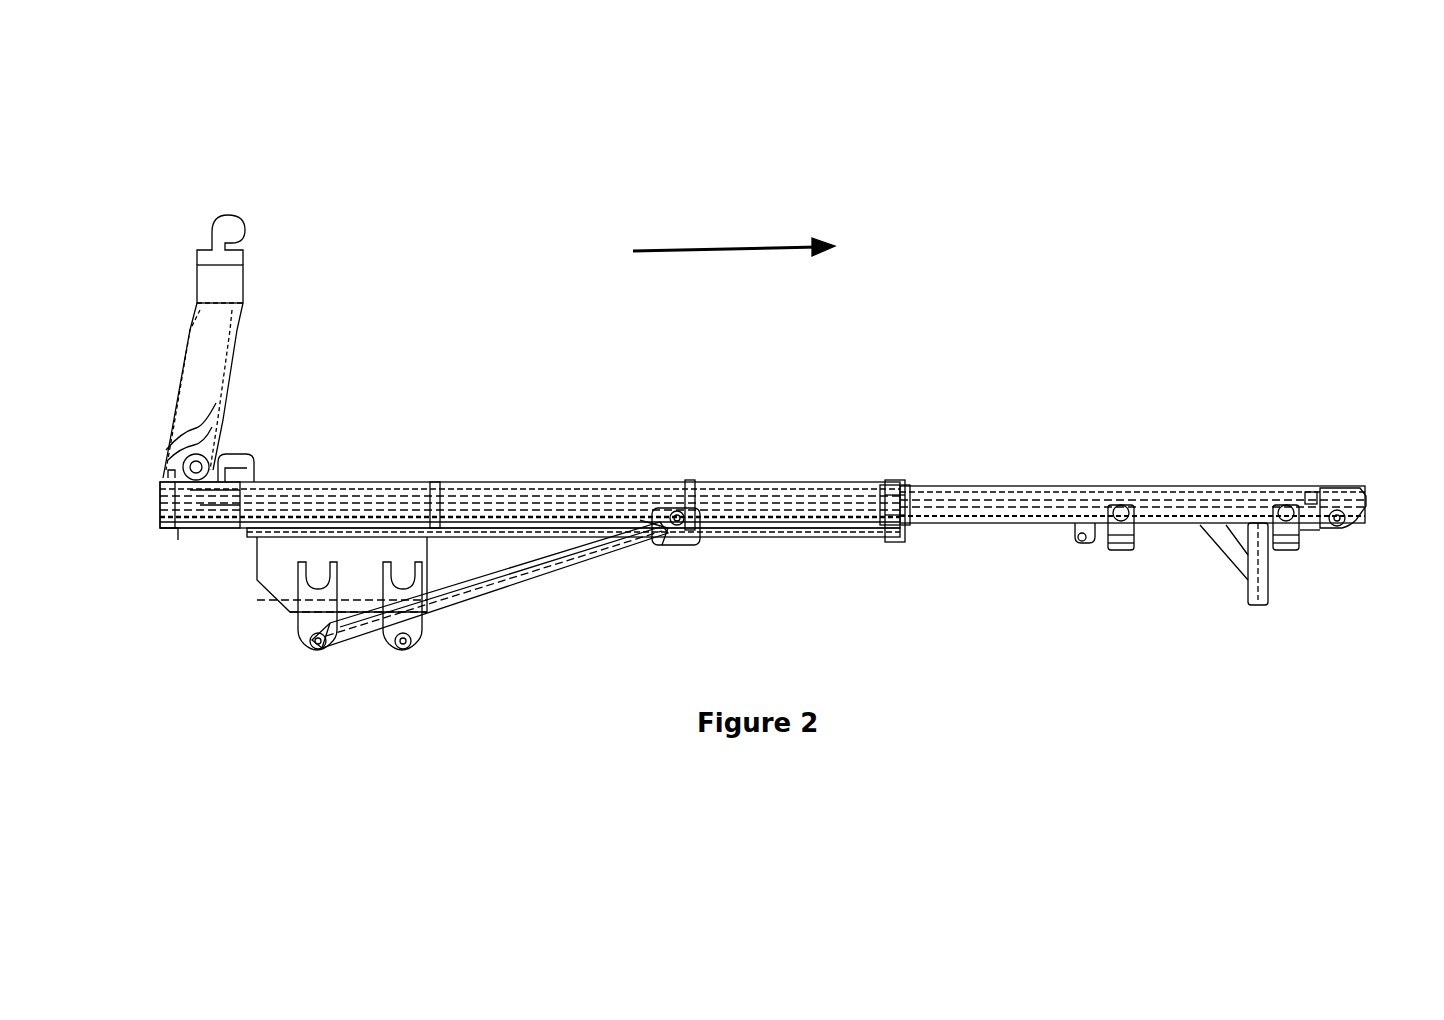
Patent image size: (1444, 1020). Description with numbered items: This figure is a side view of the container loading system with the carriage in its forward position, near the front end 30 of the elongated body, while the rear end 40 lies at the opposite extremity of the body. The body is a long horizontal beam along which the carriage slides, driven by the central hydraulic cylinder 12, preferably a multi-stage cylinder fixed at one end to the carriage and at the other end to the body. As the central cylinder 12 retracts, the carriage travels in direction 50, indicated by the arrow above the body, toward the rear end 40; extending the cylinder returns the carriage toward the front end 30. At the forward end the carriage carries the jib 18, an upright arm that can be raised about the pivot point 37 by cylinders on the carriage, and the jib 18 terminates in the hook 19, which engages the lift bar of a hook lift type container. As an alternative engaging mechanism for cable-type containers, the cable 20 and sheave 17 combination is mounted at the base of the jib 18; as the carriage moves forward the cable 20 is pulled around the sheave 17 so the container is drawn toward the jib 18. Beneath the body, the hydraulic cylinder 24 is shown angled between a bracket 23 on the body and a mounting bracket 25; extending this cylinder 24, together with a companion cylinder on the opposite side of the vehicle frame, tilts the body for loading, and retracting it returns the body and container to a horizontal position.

The central hydraulic cylinder 12 is at (835, 512).
The sheave 17 is at (170, 470).
The jib 18 is at (203, 360).
The hook 19 is at (233, 252).
The cable 20 is at (225, 465).
The support bracket 23 is at (278, 582).
The hydraulic cylinder 24 is at (540, 567).
The arm mounting bracket 25 is at (698, 548).
The front end 30 is at (102, 527).
The pivot point 37 is at (163, 535).
The rear end 40 is at (1437, 527).
The direction 50 is at (700, 231).